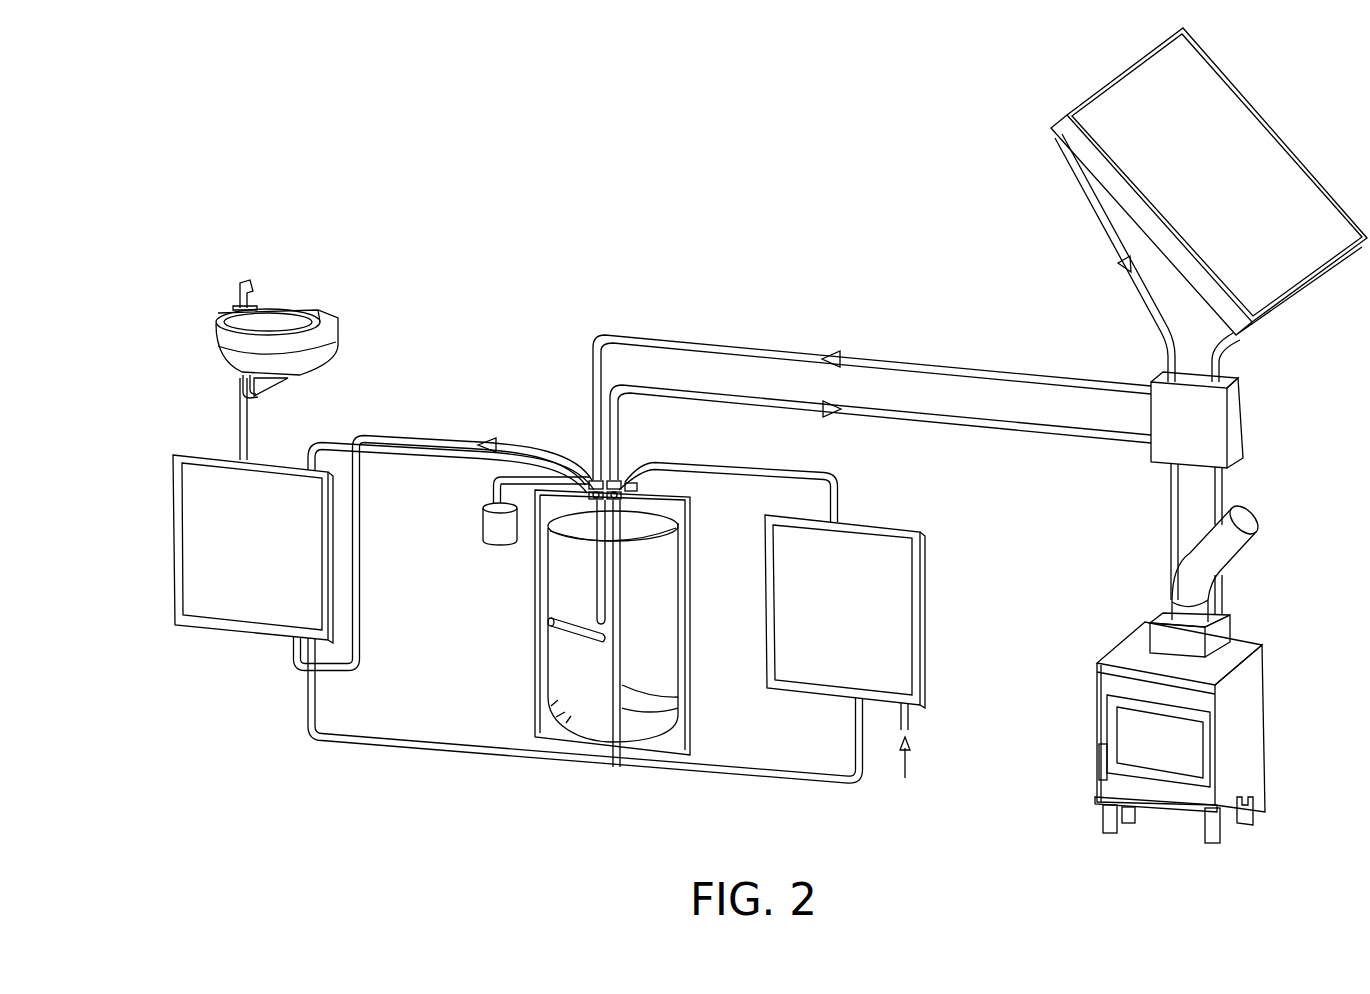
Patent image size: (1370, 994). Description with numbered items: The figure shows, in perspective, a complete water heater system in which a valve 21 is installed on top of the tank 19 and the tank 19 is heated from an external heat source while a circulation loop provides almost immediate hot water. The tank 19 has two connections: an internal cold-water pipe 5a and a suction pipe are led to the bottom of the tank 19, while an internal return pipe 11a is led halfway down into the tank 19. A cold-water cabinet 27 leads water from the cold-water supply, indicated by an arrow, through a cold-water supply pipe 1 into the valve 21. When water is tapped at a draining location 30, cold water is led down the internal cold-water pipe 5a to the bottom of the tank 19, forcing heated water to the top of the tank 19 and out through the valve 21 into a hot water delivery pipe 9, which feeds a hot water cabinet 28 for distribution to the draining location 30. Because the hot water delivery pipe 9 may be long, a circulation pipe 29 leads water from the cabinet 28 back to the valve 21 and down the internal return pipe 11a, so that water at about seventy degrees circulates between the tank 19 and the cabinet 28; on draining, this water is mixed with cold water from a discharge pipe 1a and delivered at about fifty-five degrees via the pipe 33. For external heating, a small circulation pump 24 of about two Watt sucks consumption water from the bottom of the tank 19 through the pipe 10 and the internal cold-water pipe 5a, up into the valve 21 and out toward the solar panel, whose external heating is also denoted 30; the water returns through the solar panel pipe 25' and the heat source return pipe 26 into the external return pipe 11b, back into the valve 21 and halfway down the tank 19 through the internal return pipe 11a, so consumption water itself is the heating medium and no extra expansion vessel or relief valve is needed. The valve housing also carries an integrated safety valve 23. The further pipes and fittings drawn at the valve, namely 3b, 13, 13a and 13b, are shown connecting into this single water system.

The cold-water supply pipe 1 is at (838, 493).
The discharge pipe 1a is at (760, 795).
The pipe to control unit 3b is at (955, 430).
The internal cold-water pipe 5a is at (627, 648).
The hot water delivery pipe 9 is at (456, 432).
The pipe 10 is at (623, 768).
The internal return pipe 11a is at (603, 568).
The external return pipe 11b is at (968, 364).
The pipe 13 is at (490, 481).
The expansion vessel 13a is at (485, 514).
The valve fittings 13b is at (593, 478).
The tank 19 is at (543, 668).
The valve 21 is at (670, 483).
The safety valve 23 is at (550, 633).
The circulation pump 24 is at (1228, 424).
The solar panel pipe 25' is at (1264, 354).
The heat source return pipe 26 is at (1110, 238).
The cold-water cabinet 27 is at (888, 603).
The hot water cabinet 28 is at (203, 490).
The circulation pipe 29 is at (405, 453).
The draining location / external heating 30 is at (1259, 150).
The pipe 33 is at (250, 418).